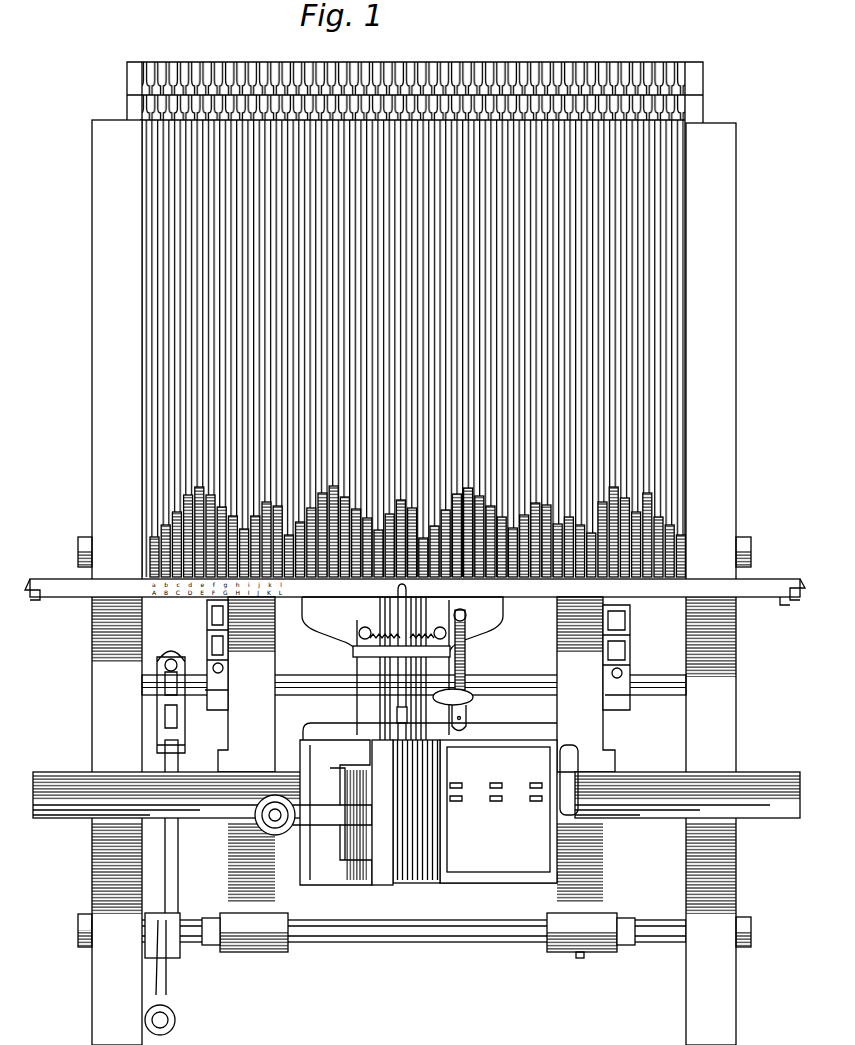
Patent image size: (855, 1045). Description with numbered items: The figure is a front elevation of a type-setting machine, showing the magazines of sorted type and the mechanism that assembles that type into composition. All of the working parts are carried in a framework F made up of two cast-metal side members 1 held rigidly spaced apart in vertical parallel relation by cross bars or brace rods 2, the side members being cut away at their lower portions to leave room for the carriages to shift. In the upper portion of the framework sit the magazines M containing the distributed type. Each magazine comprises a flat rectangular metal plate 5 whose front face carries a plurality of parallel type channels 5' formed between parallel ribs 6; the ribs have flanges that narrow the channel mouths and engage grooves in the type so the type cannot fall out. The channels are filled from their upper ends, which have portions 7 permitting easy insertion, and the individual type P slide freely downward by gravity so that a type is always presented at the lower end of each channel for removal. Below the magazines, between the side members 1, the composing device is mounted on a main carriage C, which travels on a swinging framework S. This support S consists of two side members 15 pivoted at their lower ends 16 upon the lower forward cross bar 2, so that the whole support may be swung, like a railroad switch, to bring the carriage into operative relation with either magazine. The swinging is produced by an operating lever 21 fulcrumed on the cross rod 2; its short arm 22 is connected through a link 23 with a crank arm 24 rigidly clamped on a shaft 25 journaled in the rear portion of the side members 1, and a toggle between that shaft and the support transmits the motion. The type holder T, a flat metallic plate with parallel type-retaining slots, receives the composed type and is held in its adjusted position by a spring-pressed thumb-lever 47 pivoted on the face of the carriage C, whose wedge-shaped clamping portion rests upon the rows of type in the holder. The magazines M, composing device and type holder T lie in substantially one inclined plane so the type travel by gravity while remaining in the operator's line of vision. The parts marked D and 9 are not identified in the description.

The side member 1 is at (722, 405).
The framework F is at (105, 445).
The magazine M is at (415, 308).
The channel end portion 7 is at (430, 112).
The magazine plate 5 is at (433, 89).
The type channel 5' is at (423, 348).
The rib 6 is at (645, 213).
The type P is at (665, 532).
The side member 15 is at (242, 730).
The swinging framework S is at (415, 749).
The shaft 25 is at (289, 678).
The crank arm 24 is at (170, 711).
The distributor lever D is at (408, 622).
The type holder T is at (509, 811).
The guide bars 9 is at (405, 878).
The thumb-lever 47 is at (375, 820).
The main carriage C is at (297, 804).
The link 23 is at (173, 878).
The short arm 22 is at (180, 958).
The operating lever 21 is at (168, 978).
The cross bar 2 is at (460, 930).
The lower end 16 is at (270, 930).